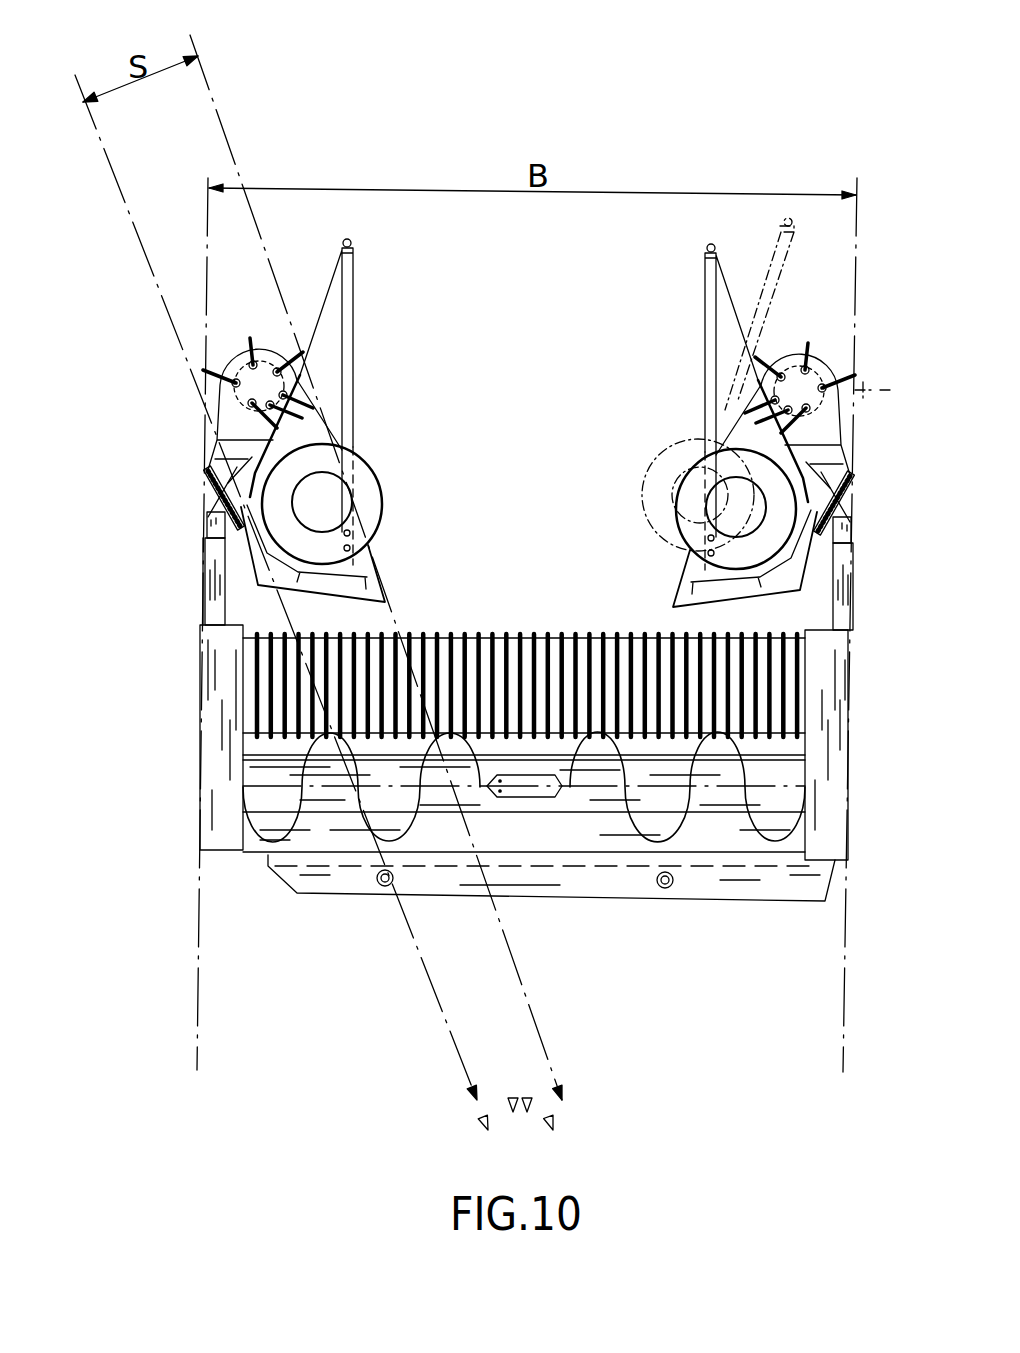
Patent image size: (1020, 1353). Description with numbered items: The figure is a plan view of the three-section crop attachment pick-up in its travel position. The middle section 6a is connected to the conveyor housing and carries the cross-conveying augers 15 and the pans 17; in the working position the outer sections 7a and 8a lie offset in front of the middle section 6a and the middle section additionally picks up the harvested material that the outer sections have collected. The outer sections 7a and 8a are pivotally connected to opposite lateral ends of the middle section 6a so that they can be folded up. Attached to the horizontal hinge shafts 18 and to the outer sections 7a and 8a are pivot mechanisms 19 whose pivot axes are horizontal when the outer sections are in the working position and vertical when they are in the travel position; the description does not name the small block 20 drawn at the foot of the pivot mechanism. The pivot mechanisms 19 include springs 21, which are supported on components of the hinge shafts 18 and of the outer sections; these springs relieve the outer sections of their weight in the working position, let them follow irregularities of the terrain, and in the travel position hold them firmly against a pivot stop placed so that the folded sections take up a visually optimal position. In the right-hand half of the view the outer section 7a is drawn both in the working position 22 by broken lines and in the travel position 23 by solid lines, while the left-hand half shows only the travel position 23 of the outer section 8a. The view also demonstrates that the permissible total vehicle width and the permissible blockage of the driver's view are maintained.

The middle section 6a is at (568, 612).
The outer section 7a is at (690, 408).
The outer section 8a is at (377, 373).
The cross-conveying auger 15 is at (372, 492).
The pan 17 is at (222, 350).
The hinge shaft 18 is at (212, 605).
The pivot mechanism 19 is at (195, 532).
The pivot block 20 is at (208, 517).
The spring 21 is at (210, 493).
The working position (broken lines) 22 is at (853, 418).
The travel position 23 is at (823, 435).